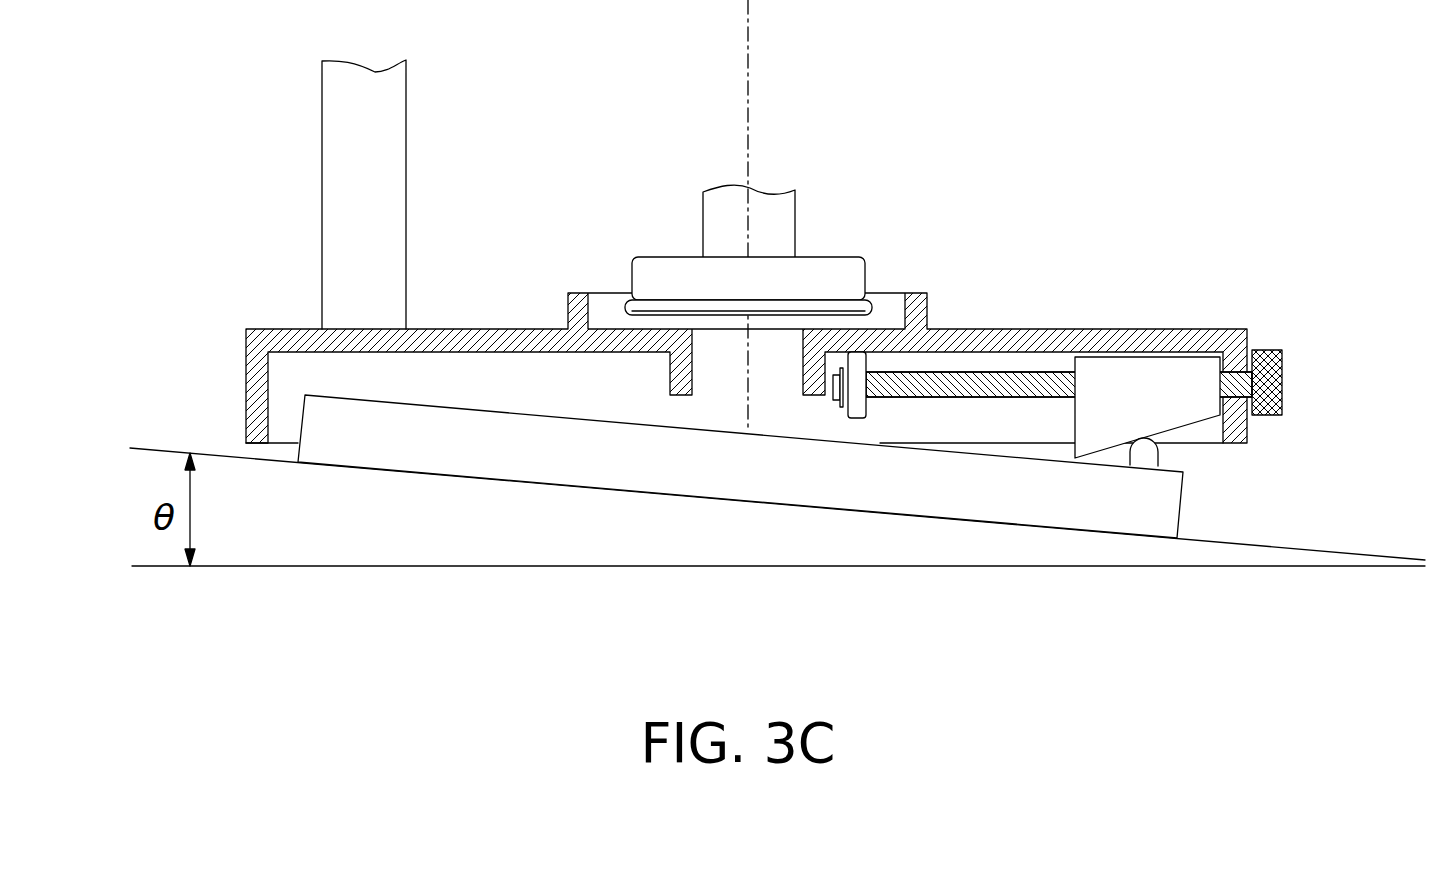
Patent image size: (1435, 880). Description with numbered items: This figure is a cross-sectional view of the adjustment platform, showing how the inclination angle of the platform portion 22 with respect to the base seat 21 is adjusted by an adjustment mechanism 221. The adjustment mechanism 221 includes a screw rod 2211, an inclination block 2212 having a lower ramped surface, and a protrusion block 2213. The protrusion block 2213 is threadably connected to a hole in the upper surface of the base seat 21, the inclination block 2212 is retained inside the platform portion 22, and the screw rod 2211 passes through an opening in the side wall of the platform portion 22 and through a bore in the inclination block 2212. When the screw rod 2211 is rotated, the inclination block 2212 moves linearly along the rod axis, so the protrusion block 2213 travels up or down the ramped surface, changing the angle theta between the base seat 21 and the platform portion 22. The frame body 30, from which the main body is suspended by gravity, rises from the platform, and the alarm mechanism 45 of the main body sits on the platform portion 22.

The base seat 21 is at (323, 428).
The platform portion 22 is at (245, 343).
The frame body 30 is at (340, 132).
The alarm mechanism 45 is at (648, 263).
The adjustment mechanism 221 is at (1085, 308).
The screw rod 2211 is at (1008, 380).
The inclination block 2212 is at (1150, 370).
The protrusion block 2213 is at (1227, 340).